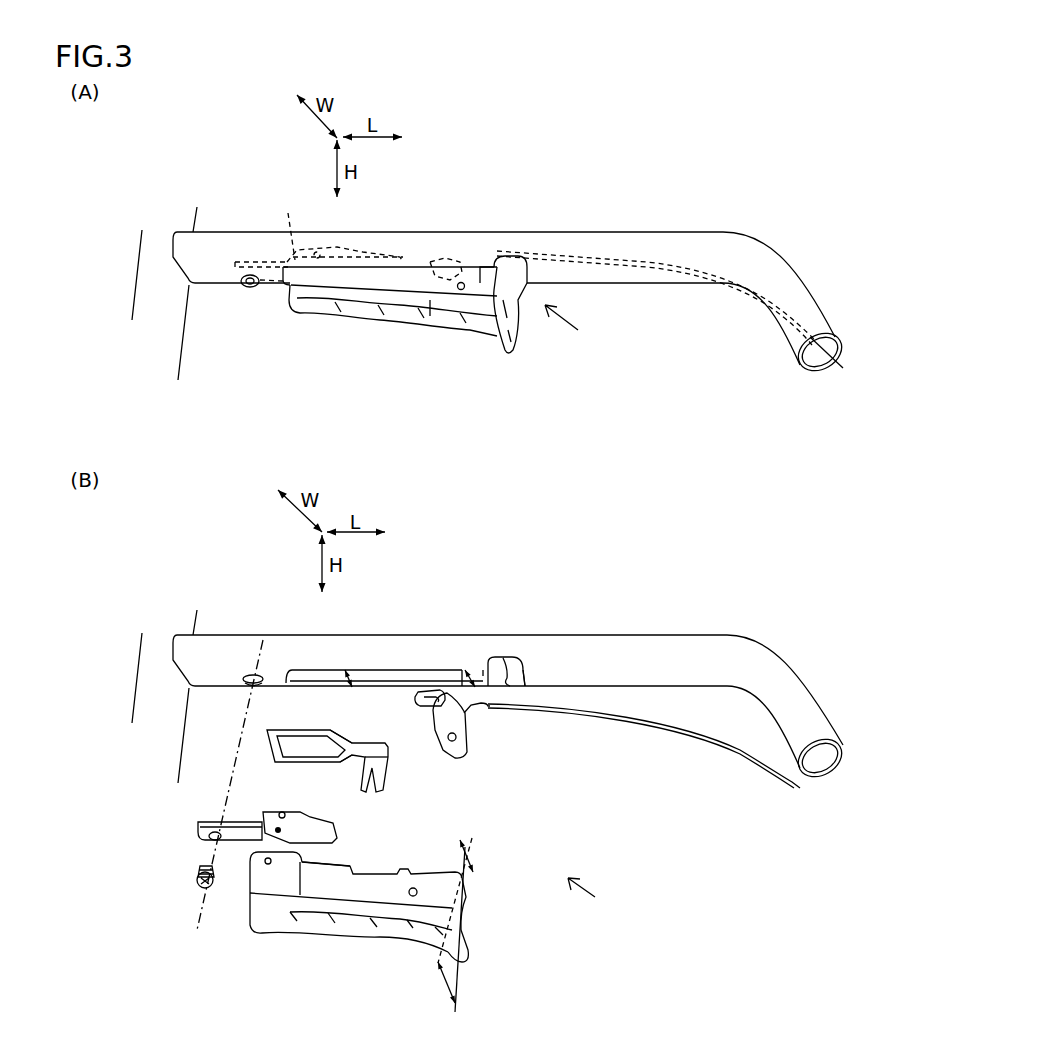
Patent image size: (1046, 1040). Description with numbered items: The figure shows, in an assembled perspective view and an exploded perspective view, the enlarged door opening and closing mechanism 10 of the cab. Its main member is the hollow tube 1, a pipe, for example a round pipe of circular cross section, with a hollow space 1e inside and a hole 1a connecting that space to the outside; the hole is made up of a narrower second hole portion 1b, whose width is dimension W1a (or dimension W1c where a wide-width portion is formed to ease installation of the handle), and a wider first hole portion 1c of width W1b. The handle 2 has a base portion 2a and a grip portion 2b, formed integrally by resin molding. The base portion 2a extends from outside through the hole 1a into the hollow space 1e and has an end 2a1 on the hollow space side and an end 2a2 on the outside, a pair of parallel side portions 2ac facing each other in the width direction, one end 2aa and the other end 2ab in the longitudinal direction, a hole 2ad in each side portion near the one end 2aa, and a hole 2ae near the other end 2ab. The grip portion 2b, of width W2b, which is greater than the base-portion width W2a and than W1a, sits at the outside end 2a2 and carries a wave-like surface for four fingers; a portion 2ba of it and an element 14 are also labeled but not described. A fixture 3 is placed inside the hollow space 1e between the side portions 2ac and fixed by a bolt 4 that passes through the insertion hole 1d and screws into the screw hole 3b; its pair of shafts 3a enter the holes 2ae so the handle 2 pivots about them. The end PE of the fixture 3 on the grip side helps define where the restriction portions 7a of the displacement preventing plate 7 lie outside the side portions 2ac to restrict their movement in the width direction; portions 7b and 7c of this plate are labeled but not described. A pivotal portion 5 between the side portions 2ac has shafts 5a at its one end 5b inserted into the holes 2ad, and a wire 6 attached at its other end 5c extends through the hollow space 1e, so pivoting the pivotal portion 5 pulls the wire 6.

The hollow tube 1 is at (603, 242).
The hole 1a is at (545, 190).
The second hole portion 1b is at (479, 265).
The first hole portion 1c is at (506, 255).
The insertion hole 1d is at (250, 673).
The hollow space 1e is at (813, 355).
The handle 2 is at (340, 380).
The base portion 2a is at (367, 280).
The end on the hollow space side 2a1 is at (390, 265).
The end on the outside 2a2 is at (429, 292).
The one end 2aa is at (508, 293).
The other end 2ab is at (286, 281).
The side portions 2ac is at (358, 277).
The hole 2ad is at (462, 290).
The hole 2ae is at (310, 264).
The grip portion 2b is at (393, 318).
The end portion of second plate 2ba is at (507, 343).
The fixture 3 is at (255, 262).
The shafts 3a is at (316, 253).
The screw hole 3b is at (205, 836).
The bolt 4 is at (243, 288).
The pivotal portion 5 is at (436, 256).
The shafts 5a is at (461, 282).
The one end 5b is at (472, 708).
The other end 5c is at (438, 698).
The wire 6 is at (665, 267).
The displacement preventing plate 7 is at (288, 730).
The restriction portions 7a is at (295, 766).
The bent portion of clamp 7b is at (347, 735).
The leg portion of clamp 7c is at (386, 775).
The door opening and closing mechanism 10 is at (585, 347).
The vehicle floor 14 is at (148, 286).
The end on the grip portion side of fixture PE is at (283, 827).
The dimension of second hole portion in width direction W1a is at (450, 668).
The dimension of first hole portion in width direction W1b is at (512, 672).
The dimension of second hole portion with wide-width portion W1c is at (338, 667).
The dimension of base portion in width direction W2a is at (467, 850).
The dimension of grip portion in width direction W2b is at (445, 985).